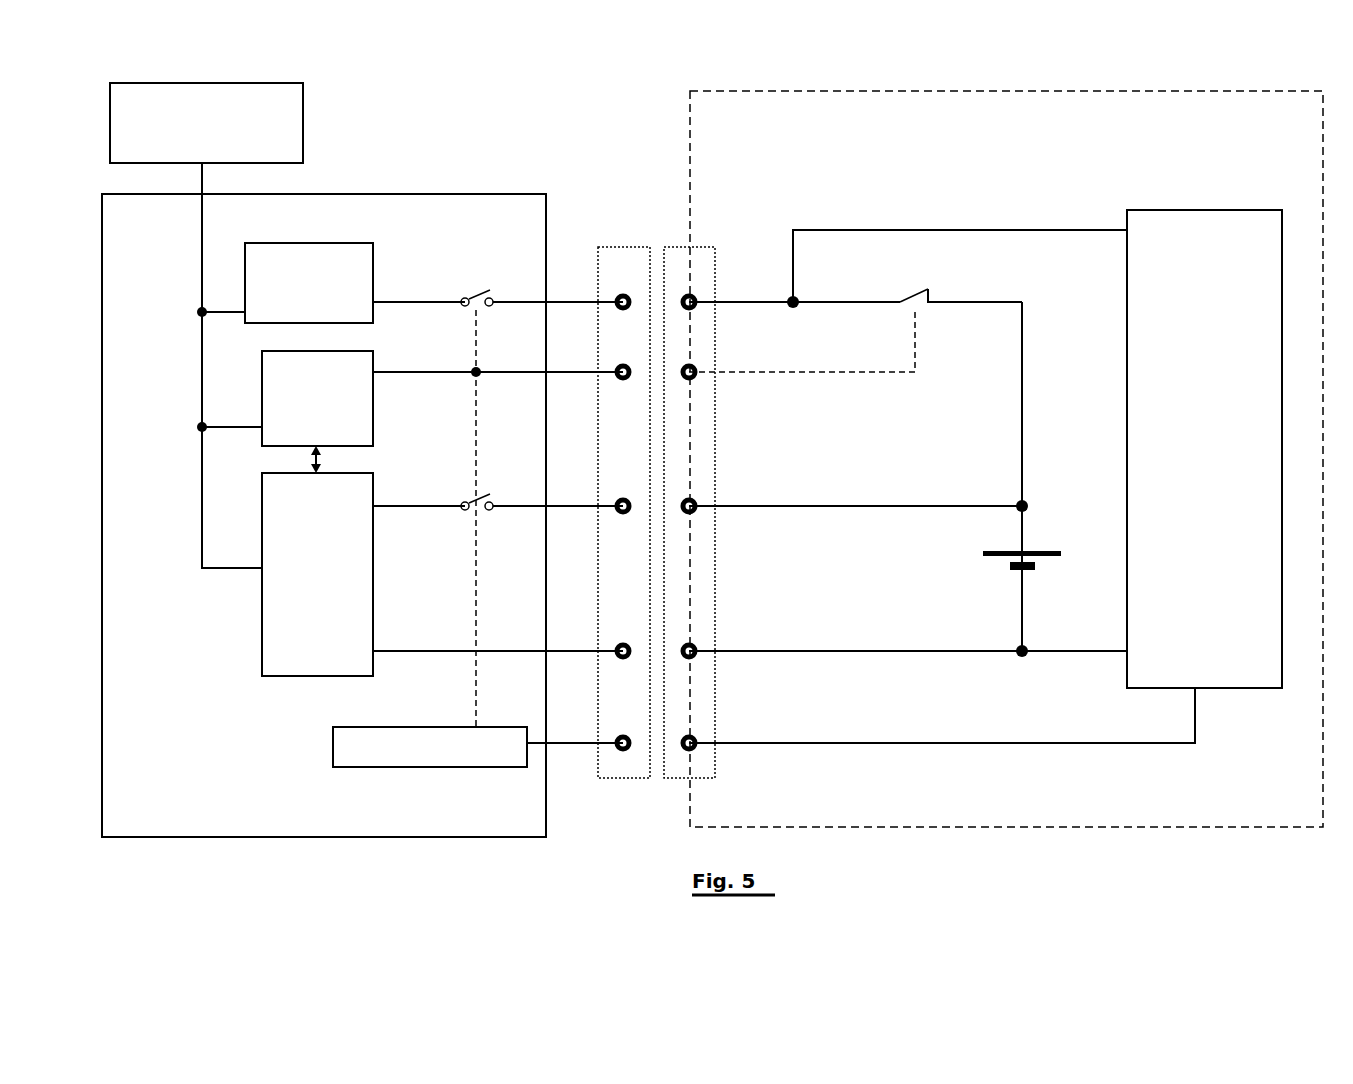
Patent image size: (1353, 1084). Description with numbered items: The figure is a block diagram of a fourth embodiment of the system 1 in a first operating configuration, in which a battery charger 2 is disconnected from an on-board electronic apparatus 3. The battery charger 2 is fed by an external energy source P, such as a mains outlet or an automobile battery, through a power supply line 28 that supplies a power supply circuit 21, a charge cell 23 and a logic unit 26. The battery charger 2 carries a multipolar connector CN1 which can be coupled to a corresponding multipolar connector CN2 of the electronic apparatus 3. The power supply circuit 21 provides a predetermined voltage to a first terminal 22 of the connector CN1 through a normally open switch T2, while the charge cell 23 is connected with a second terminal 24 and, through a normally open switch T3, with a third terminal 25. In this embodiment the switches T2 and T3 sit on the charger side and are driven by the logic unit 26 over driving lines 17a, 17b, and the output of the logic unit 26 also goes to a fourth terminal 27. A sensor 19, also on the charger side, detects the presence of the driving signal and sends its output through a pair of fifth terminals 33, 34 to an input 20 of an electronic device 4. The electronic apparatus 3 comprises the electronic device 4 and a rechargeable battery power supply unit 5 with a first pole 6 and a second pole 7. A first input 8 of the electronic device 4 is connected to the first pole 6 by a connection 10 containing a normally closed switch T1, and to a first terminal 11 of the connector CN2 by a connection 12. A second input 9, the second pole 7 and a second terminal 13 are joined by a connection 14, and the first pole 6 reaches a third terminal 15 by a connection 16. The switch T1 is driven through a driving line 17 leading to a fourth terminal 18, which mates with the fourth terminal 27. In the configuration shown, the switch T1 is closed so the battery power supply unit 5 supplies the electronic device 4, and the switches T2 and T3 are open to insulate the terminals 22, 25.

The system 1 is at (324, 498).
The battery charger 2 is at (324, 542).
The electronic apparatus 3 is at (1006, 485).
The electronic device 4 is at (1204, 474).
The battery power supply unit 5 is at (984, 578).
The first pole 6 is at (1043, 487).
The second pole 7 is at (999, 662).
The first input 8 is at (960, 239).
The second input 9 is at (1074, 670).
The connection 10 is at (1055, 404).
The first terminal 11 is at (716, 248).
The connection 12 is at (794, 243).
The second terminal 13 is at (726, 671).
The connection 14 is at (855, 612).
The third terminal 15 is at (724, 486).
The connection 16 is at (855, 528).
The driving line 17 is at (802, 363).
The driving line 17a is at (433, 516).
The driving line 17b is at (427, 404).
The fourth terminal 18 is at (724, 403).
The sensor 19 is at (431, 760).
The input 20 is at (942, 715).
The power supply circuit 21 is at (333, 268).
The first terminal 22 is at (593, 235).
The charge cell 23 is at (408, 590).
The second terminal 24 is at (589, 668).
The third terminal 25 is at (595, 529).
The logic unit 26 is at (412, 404).
The fourth terminal 27 is at (595, 398).
The power supply line 28 is at (194, 381).
The fifth terminal 33 is at (592, 770).
The fifth terminal 34 is at (728, 764).
The external energy source P is at (231, 137).
The normally closed switch T1 is at (961, 282).
The normally open switch T2 is at (542, 263).
The normally open switch T3 is at (513, 478).
The multipolar connector CN1 is at (602, 553).
The multipolar connector CN2 is at (659, 571).